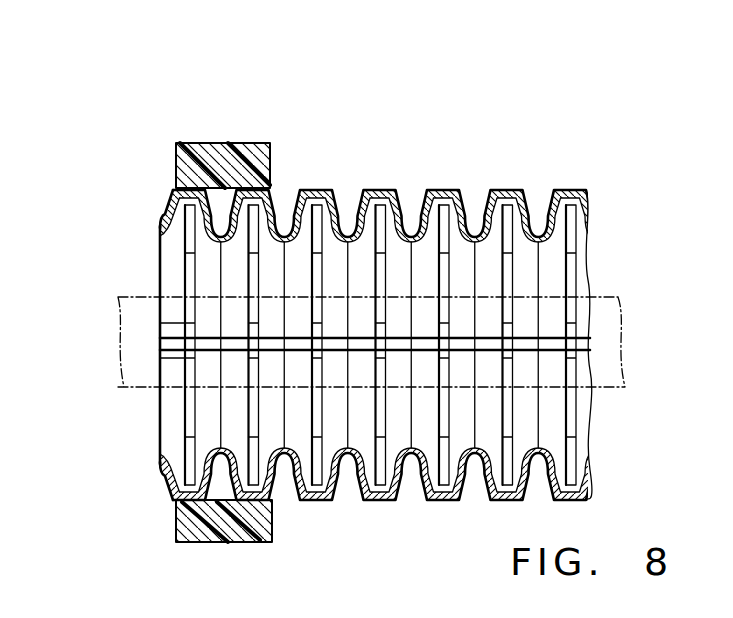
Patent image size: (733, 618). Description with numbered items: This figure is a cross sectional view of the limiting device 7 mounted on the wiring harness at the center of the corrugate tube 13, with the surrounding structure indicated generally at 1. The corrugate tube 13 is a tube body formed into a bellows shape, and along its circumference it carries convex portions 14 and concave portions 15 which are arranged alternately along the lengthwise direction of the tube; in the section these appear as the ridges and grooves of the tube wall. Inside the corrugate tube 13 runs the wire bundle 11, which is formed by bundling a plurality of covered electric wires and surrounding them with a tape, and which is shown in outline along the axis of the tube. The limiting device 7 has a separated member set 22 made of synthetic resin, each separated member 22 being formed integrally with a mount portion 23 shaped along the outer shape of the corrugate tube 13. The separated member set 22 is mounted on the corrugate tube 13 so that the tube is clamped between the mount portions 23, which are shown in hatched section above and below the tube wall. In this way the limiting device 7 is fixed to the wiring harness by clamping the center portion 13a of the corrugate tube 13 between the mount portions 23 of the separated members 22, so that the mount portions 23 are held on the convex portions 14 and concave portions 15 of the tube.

The hose assembly 1 is at (329, 305).
The limiting device 7 is at (144, 340).
The wire bundle 11 is at (627, 357).
The corrugate tube 13 is at (392, 310).
The center portion of the corrugate tube 13a is at (267, 167).
The convex portions 14 is at (503, 500).
The concave portions 15 is at (470, 217).
The separated member 22 is at (176, 173).
The mount portion 23 is at (227, 160).